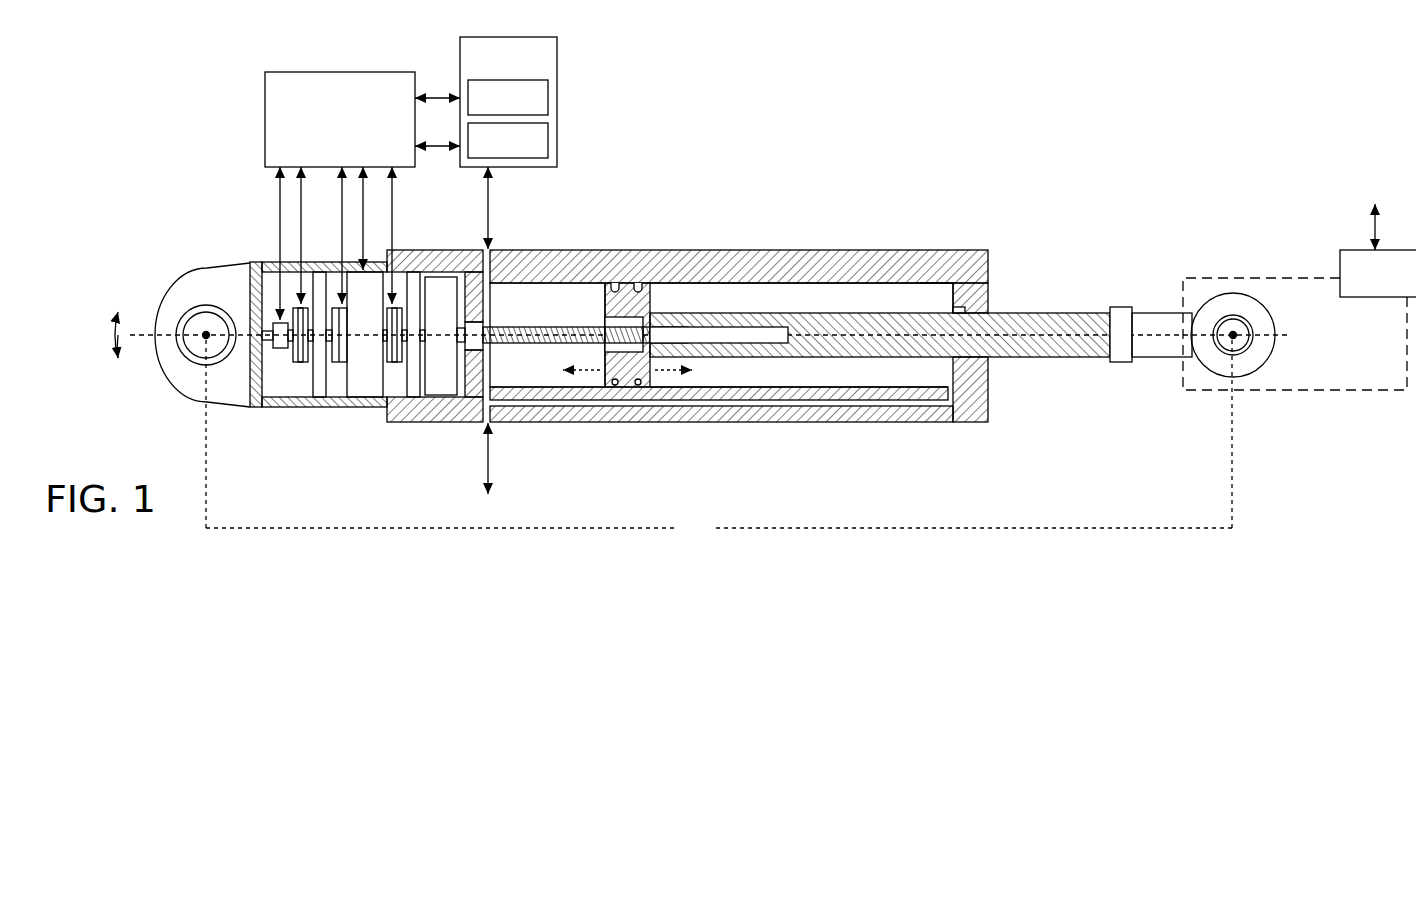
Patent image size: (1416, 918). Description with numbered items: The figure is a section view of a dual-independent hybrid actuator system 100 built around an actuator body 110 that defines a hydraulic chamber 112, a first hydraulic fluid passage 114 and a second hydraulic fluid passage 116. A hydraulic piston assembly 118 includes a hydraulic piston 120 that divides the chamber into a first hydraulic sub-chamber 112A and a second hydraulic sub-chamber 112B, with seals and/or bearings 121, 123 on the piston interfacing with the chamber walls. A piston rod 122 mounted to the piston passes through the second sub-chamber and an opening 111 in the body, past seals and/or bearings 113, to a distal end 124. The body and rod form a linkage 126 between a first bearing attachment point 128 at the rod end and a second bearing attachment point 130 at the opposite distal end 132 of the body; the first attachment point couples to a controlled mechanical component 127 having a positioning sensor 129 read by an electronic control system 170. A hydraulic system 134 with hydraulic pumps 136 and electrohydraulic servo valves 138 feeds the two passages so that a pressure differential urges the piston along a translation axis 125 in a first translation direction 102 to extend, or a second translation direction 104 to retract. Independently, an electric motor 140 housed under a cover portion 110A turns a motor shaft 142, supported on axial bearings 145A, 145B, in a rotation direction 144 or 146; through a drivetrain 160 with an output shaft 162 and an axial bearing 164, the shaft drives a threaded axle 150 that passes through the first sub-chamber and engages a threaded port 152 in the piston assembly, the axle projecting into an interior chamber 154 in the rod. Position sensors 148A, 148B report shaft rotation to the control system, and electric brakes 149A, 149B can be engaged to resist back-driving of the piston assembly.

The dual-independent hybrid actuator system 100 is at (1060, 207).
The first translation direction 102 is at (693, 370).
The second translation direction 104 is at (560, 370).
The actuator body 110 is at (634, 336).
The cover portion 110A is at (258, 262).
The opening 111 is at (977, 345).
The hydraulic chamber 112 is at (935, 300).
The first hydraulic sub-chamber 112A is at (522, 300).
The second hydraulic sub-chamber 112B is at (833, 303).
The seals and/or bearings 113 is at (970, 312).
The first hydraulic fluid passage 114 is at (490, 268).
The second hydraulic fluid passage 116 is at (585, 406).
The hydraulic piston assembly 118 is at (637, 300).
The hydraulic piston 120 is at (646, 267).
The seals and/or bearings 121 is at (614, 282).
The piston rod 122 is at (921, 283).
The seals and/or bearings 123 is at (640, 300).
The distal end 124 is at (1299, 284).
The translation axis 125 is at (698, 335).
The linkage 126 is at (719, 440).
The controlled mechanical component 127 is at (1295, 334).
The first bearing attachment point 128 is at (1253, 321).
The positioning sensor 129 is at (1377, 237).
The second bearing attachment point 130 is at (181, 303).
The distal end 132 is at (183, 231).
The hydraulic system 134 is at (504, 277).
The hydraulic pumps 136 is at (508, 97).
The electrohydraulic servo valves 138 is at (508, 140).
The electric motor 140 is at (361, 384).
The motor shaft 142 is at (272, 327).
The first rotation direction 144 is at (138, 323).
The axial bearing 145A is at (411, 386).
The axial bearing 145B is at (320, 387).
The rotation direction 146 is at (139, 360).
The position sensor 148A is at (341, 357).
The position sensor 148B is at (282, 349).
The electric brake 149A is at (389, 357).
The electric brake 149B is at (300, 358).
The threaded axle 150 is at (550, 330).
The threaded port 152 is at (634, 318).
The interior chamber 154 is at (748, 334).
The drivetrain 160 is at (440, 385).
The output shaft 162 is at (462, 344).
The axial bearing 164 is at (477, 320).
The electronic control system 170 is at (362, 196).